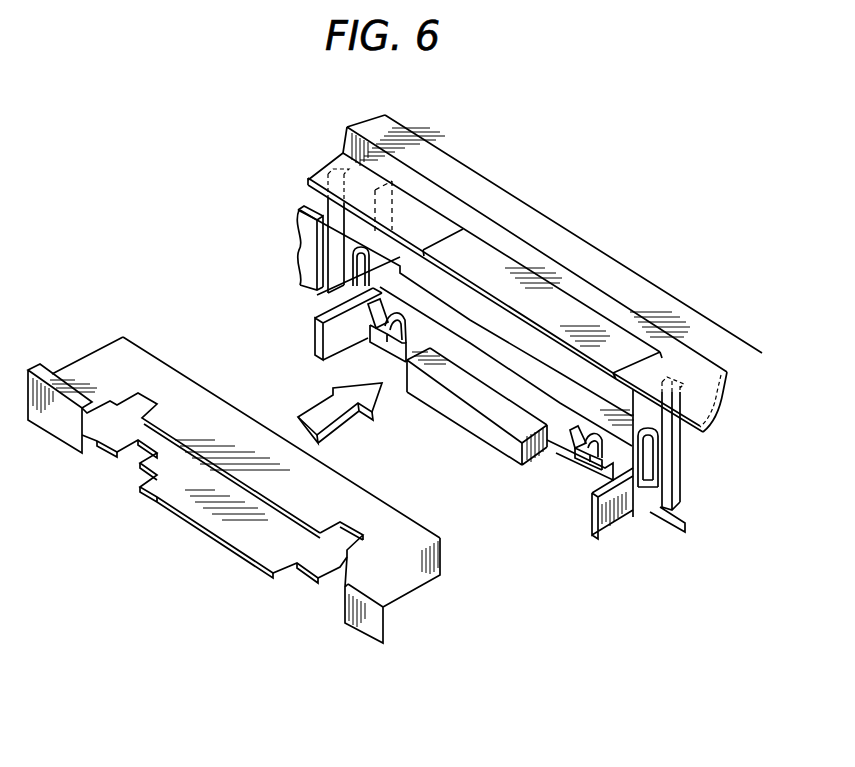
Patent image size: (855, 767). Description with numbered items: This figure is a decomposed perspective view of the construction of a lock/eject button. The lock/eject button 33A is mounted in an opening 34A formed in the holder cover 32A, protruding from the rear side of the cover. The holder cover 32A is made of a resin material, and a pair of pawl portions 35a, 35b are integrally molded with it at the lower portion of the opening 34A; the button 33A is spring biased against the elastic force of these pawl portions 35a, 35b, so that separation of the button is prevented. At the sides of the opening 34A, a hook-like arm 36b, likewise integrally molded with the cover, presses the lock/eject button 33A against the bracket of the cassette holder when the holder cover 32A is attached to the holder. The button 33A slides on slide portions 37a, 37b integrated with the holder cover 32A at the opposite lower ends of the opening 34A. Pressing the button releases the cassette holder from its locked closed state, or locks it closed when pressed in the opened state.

The holder cover 32A is at (536, 214).
The lock/eject button 33A is at (410, 593).
The opening 34A is at (623, 393).
The pawl portion 35a is at (560, 452).
The pawl portion 35b is at (365, 316).
The hook-like arm 36b is at (333, 277).
The slide portion 37a is at (593, 525).
The slide portion 37b is at (317, 331).